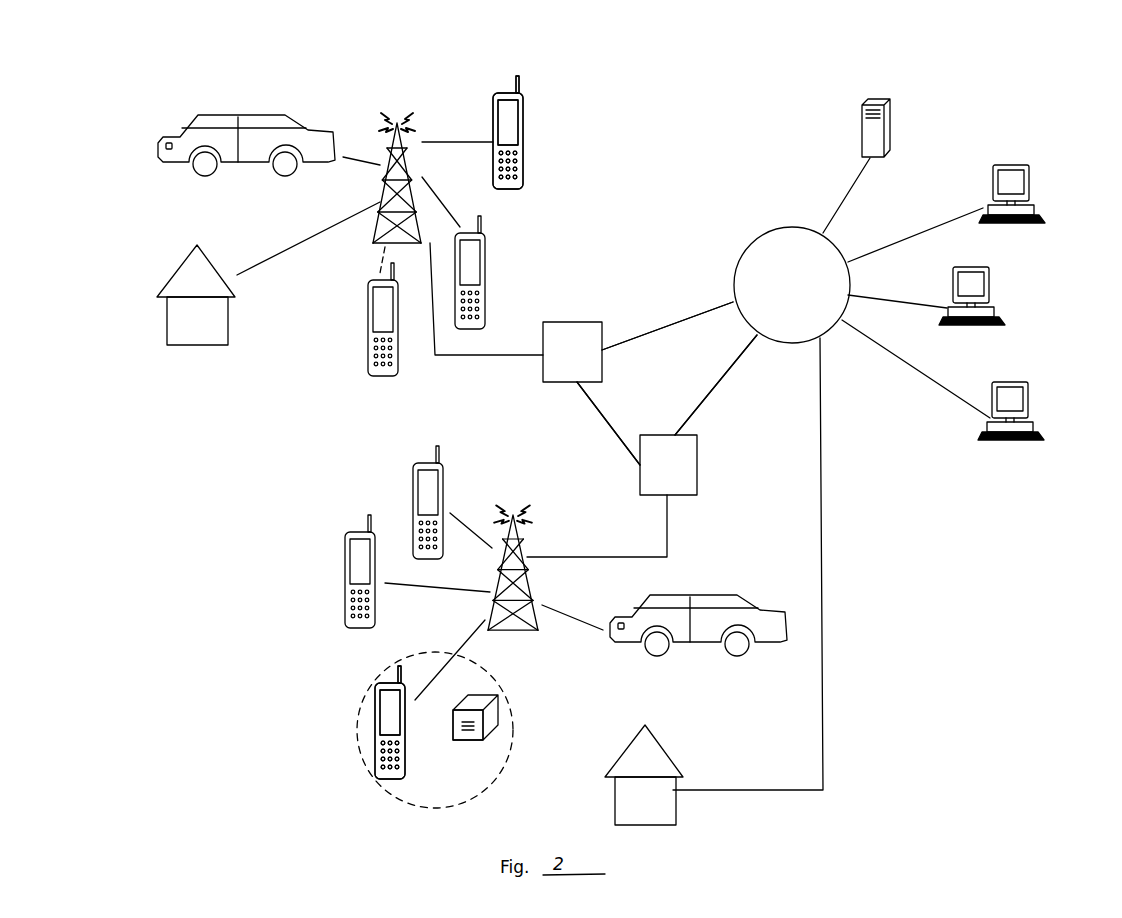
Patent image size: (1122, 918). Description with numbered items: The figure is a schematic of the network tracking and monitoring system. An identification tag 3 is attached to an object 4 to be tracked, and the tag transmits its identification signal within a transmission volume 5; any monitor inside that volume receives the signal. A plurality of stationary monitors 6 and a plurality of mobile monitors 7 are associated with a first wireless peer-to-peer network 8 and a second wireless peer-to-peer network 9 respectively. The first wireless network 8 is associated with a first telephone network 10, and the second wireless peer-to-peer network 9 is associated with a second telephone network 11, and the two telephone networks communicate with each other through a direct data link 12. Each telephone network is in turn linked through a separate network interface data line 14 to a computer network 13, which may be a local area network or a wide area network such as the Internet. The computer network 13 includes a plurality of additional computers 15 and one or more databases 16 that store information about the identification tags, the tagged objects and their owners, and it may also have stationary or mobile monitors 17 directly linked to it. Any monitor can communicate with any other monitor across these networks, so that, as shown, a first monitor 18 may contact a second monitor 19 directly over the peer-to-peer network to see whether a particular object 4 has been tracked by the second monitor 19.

The identification tag 3 is at (495, 698).
The object 4 is at (487, 722).
The transmission volume 5 is at (490, 676).
The stationary monitor 6 is at (167, 320).
The mobile monitor 7 is at (222, 114).
The first wireless peer-to-peer network 8 is at (351, 76).
The second wireless peer-to-peer network 9 is at (511, 472).
The first telephone network 10 is at (567, 322).
The second telephone network 11 is at (697, 468).
The direct data link 12 is at (603, 423).
The computer network 13 is at (753, 235).
The network interface data line 14 is at (680, 320).
The computer 15 is at (1030, 182).
The database 16 is at (862, 130).
The monitor 17 is at (675, 805).
The first monitor 18 is at (525, 110).
The second monitor 19 is at (375, 760).